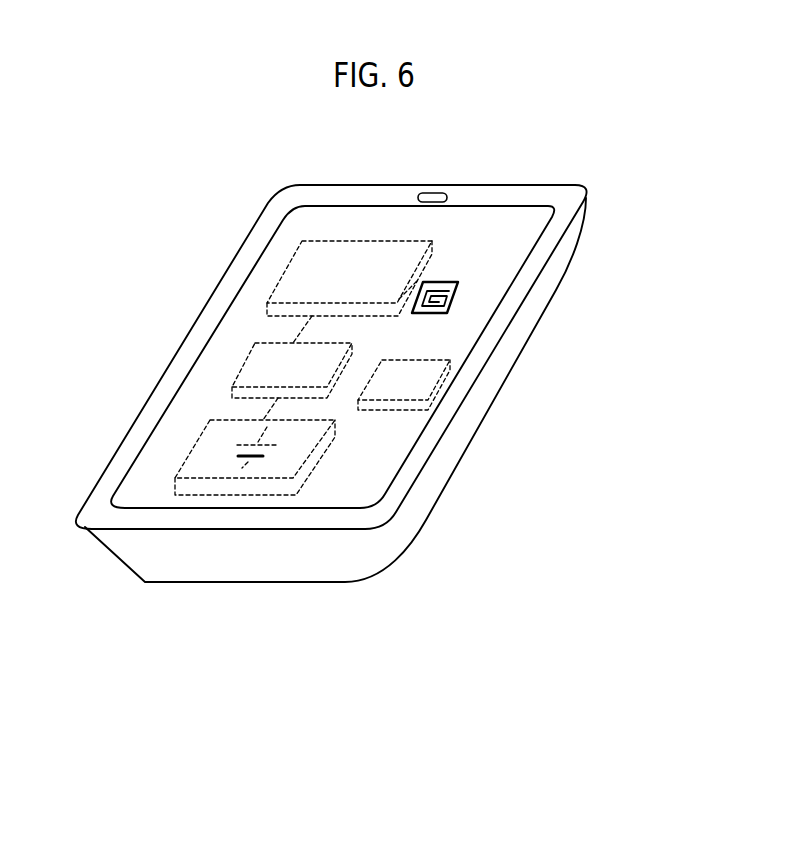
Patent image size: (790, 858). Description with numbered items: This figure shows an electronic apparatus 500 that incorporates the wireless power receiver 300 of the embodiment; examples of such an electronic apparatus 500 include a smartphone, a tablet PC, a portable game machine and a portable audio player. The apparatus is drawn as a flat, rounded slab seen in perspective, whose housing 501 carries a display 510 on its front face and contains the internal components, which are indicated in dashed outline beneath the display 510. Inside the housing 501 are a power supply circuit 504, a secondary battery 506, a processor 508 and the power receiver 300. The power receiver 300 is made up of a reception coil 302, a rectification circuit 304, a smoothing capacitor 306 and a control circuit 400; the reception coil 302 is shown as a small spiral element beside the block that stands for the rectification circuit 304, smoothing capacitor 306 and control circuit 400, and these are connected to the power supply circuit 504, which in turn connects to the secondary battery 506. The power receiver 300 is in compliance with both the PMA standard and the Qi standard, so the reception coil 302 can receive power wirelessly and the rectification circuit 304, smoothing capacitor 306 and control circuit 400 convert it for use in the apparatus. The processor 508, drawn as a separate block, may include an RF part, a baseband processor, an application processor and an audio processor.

The electronic apparatus 500 is at (326, 740).
The housing 501 is at (405, 522).
The display 510 is at (510, 223).
The power receiver 300 is at (377, 285).
The reception coil 302 is at (457, 283).
The rectification circuit 304 is at (246, 285).
The smoothing capacitor 306 is at (246, 285).
The control circuit 400 is at (307, 278).
The power supply circuit 504 is at (260, 372).
The secondary battery 506 is at (193, 488).
The processor 508 is at (412, 383).